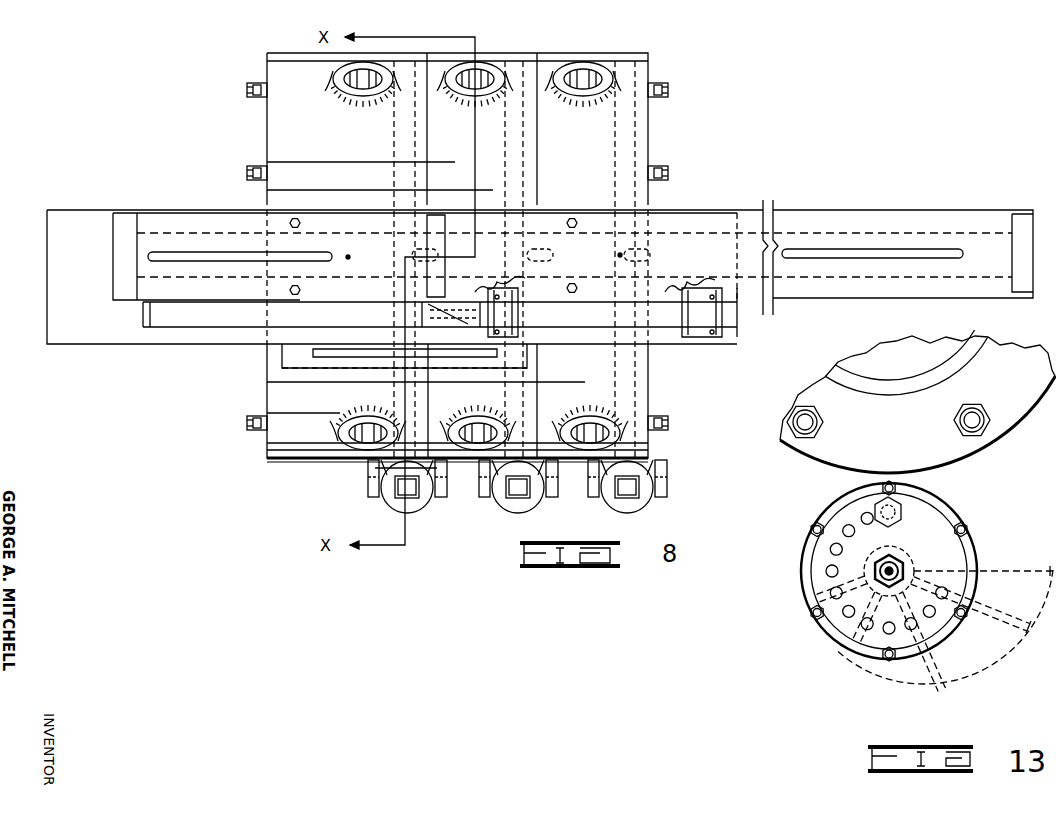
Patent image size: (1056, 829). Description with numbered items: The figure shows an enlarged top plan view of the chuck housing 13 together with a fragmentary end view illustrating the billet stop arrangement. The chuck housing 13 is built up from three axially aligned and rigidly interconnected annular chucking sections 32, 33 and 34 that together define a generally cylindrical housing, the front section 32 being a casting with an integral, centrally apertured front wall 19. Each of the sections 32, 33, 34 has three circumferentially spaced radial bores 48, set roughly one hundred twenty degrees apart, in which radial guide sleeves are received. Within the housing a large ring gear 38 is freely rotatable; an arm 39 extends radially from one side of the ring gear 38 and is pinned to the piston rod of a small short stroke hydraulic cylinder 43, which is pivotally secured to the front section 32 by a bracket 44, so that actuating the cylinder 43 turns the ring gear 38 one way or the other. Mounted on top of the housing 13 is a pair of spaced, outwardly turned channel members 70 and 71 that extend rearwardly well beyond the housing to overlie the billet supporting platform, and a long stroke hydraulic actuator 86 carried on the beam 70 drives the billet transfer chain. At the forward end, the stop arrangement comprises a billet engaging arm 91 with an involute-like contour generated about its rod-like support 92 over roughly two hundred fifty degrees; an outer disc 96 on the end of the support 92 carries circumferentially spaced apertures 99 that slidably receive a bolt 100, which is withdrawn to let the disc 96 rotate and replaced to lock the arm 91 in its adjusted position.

In FIG. 8, the chuck housing 13 is at (331, 139).
In FIG. 8, the front annular section 32 is at (275, 80).
In FIG. 8, the annular chucking section 33 is at (526, 62).
In FIG. 8, the annular chucking section 34 is at (602, 63).
In FIG. 8, the radial bores 48 is at (477, 74).
In FIG. 8, the ring gear 38 is at (418, 152).
In FIG. 8, the channel member 70 is at (152, 298).
In FIG. 8, the channel member 71 is at (172, 218).
In FIG. 8, the hydraulic actuator 86 is at (562, 318).
In FIG. 8, the bracket 44 is at (374, 468).
In FIG. 8, the arm 39 is at (378, 487).
In FIG. 8, the hydraulic cylinder 43 is at (414, 502).
In FIG. 13, the front wall 19 is at (1002, 488).
In FIG. 13, the outer disc 96 is at (926, 526).
In FIG. 13, the apertures 99 is at (828, 571).
In FIG. 13, the bolt 100 is at (876, 512).
In FIG. 13, the support 92 is at (906, 567).
In FIG. 13, the billet engaging arm 91 is at (994, 574).